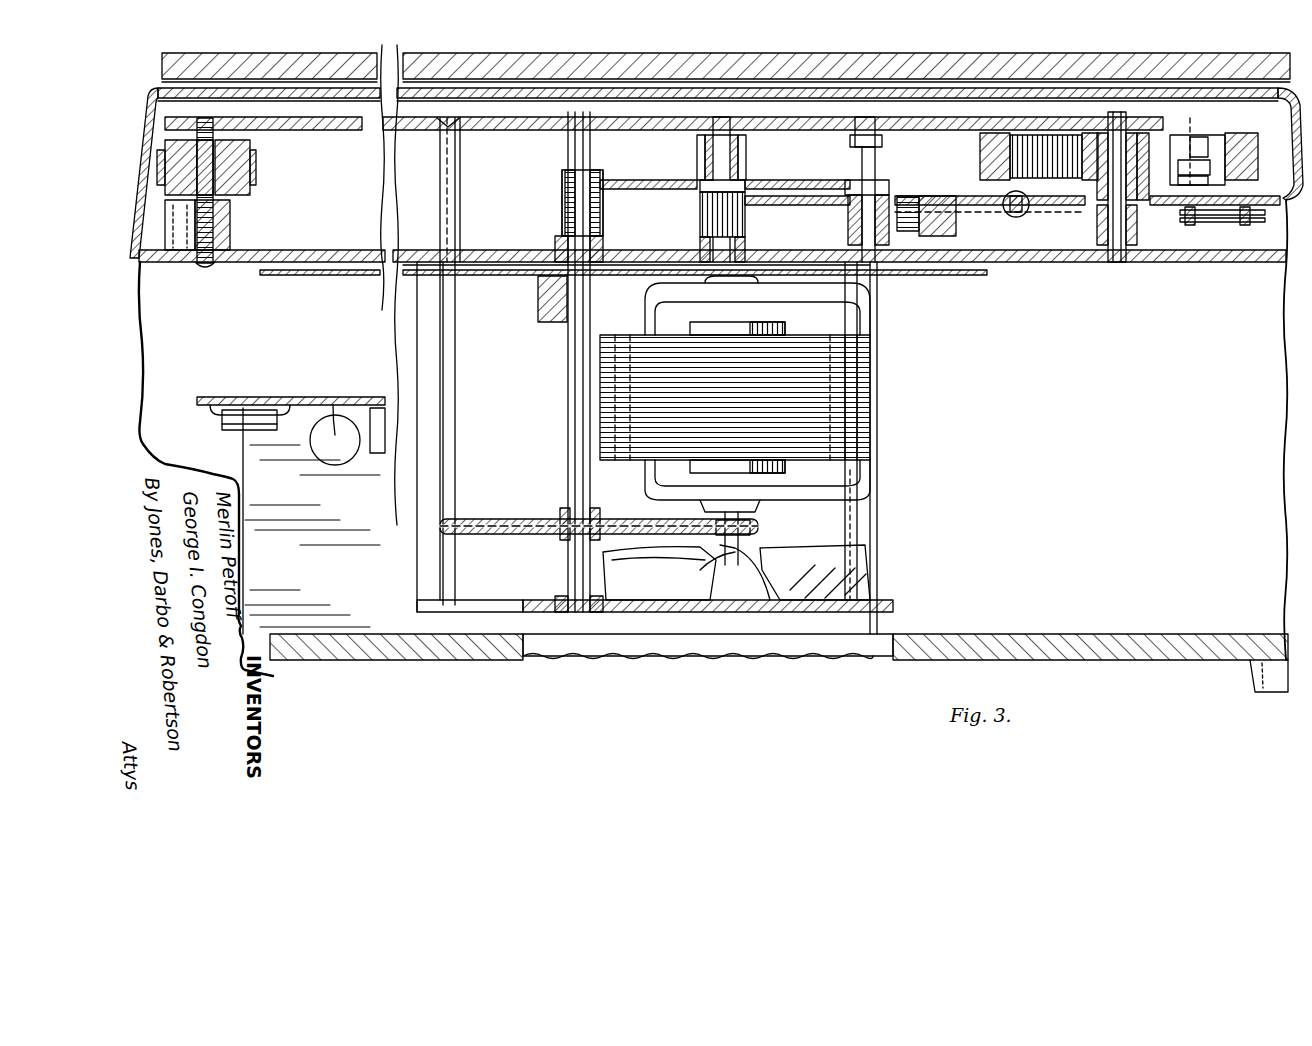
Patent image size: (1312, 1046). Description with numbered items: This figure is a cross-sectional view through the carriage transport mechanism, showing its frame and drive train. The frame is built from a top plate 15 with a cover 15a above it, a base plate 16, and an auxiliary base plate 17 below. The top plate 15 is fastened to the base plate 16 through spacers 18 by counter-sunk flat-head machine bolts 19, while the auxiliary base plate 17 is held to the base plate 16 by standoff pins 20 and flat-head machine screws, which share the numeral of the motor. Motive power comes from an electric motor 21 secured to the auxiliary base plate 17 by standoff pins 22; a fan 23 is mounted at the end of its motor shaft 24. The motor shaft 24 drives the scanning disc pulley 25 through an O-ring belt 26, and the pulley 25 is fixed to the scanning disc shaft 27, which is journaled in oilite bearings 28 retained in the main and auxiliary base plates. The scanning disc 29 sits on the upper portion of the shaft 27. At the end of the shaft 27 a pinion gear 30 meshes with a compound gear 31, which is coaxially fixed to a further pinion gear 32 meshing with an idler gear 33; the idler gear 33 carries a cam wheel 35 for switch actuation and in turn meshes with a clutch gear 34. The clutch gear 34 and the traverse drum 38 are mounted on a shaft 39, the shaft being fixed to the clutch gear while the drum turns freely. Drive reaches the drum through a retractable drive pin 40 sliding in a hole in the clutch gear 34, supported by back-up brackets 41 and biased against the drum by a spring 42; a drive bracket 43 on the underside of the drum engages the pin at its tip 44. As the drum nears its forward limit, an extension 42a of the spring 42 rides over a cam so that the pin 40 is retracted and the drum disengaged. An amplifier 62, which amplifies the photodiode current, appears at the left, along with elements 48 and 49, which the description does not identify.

The top plate 15 is at (510, 120).
The cover 15a is at (1010, 88).
The base plate 16 is at (250, 263).
The auxiliary base plate 17 is at (495, 612).
The spacers 18 is at (470, 197).
The counter-sunk flat-head machine bolts 19 is at (455, 118).
The standoff pins 20 is at (455, 452).
The electric motor 21 is at (820, 378).
The standoff pins 22 is at (850, 497).
The fan 23 is at (810, 568).
The motor shaft 24 is at (742, 550).
The scanning disc pulley 25 is at (537, 535).
The O-ring belt 26 is at (750, 527).
The scanning disc shaft 27 is at (568, 383).
The oilite bearings 28 is at (603, 250).
The scanning disc 29 is at (963, 276).
The pinion gear 30 is at (600, 172).
The compound gear 31 is at (792, 180).
The pinion gear 32 is at (746, 227).
The idler gear 33 is at (805, 206).
The clutch gear 34 is at (1005, 212).
The cam wheel 35 is at (957, 232).
The traverse drum 38 is at (1248, 133).
The shaft 39 is at (1115, 262).
The retractable drive pin 40 is at (1205, 180).
The back-up brackets 41 is at (1210, 170).
The spring 42 is at (1165, 222).
The spring extension 42a is at (1245, 222).
The drive bracket 43 is at (1200, 145).
The drive pin tip 44 is at (1187, 141).
The screw 48 is at (237, 195).
The washer block 49 is at (258, 176).
The amplifier 62 is at (282, 395).